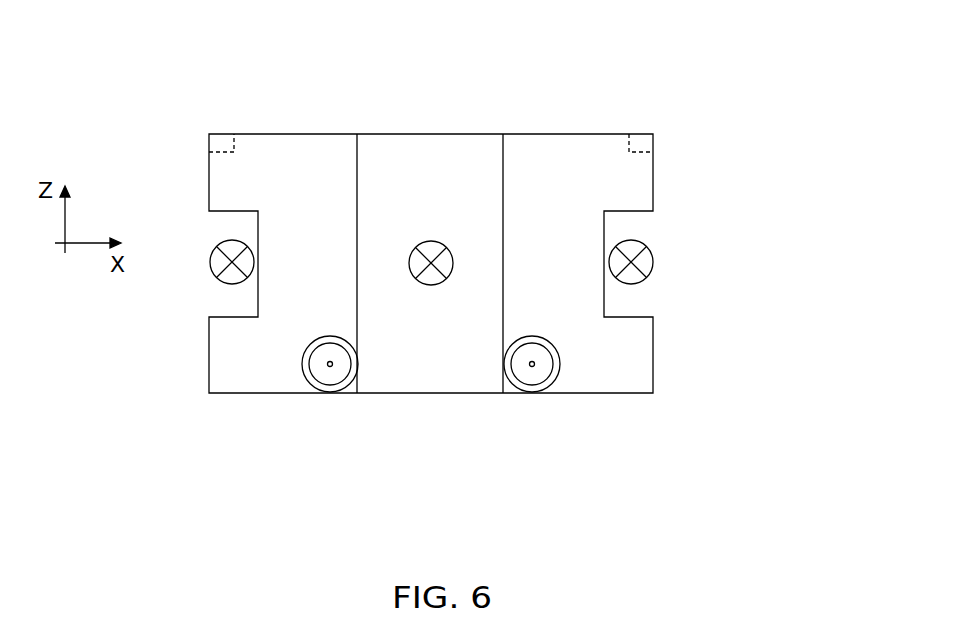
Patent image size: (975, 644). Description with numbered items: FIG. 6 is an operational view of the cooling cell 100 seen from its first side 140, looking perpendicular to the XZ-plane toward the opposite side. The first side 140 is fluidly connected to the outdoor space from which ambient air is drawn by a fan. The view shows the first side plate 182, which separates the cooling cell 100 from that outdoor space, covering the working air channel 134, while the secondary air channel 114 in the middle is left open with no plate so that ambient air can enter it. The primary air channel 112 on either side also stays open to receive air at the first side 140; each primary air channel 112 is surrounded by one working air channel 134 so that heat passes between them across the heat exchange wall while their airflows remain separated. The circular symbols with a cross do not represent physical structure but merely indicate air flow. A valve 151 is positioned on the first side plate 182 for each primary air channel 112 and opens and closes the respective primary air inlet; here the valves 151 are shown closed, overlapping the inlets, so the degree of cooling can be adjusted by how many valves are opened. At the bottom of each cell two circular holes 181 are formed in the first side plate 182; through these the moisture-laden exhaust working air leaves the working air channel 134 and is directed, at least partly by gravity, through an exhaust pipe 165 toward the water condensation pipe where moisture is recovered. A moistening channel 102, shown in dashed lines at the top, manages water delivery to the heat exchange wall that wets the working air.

The cooling cell 100 is at (341, 255).
The moistening channel 102 is at (221, 136).
The primary air channel 112 is at (642, 223).
The secondary air channel 114 is at (383, 137).
The working air channel 134 is at (348, 391).
The first side 140 is at (341, 255).
The valve 151 is at (653, 262).
The exhaust pipe 165 is at (553, 388).
The hole in the first side plate 181 is at (569, 455).
The first side plate 182 is at (232, 413).